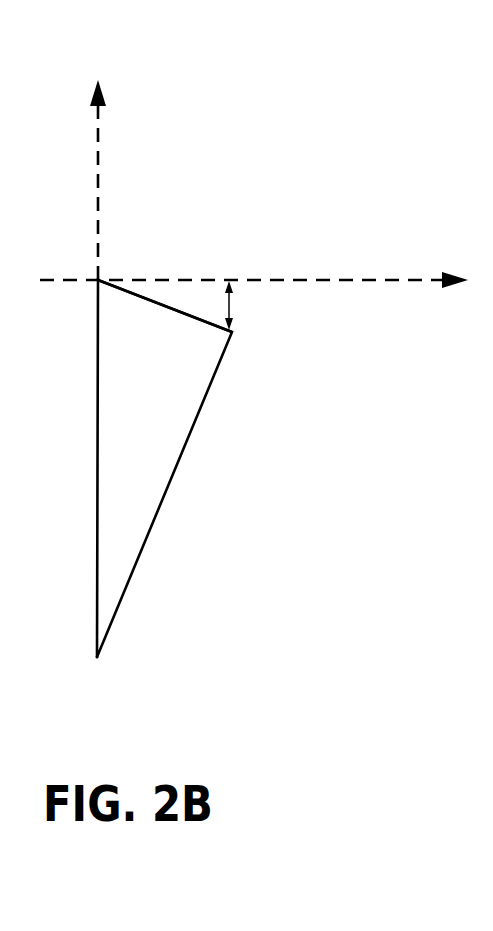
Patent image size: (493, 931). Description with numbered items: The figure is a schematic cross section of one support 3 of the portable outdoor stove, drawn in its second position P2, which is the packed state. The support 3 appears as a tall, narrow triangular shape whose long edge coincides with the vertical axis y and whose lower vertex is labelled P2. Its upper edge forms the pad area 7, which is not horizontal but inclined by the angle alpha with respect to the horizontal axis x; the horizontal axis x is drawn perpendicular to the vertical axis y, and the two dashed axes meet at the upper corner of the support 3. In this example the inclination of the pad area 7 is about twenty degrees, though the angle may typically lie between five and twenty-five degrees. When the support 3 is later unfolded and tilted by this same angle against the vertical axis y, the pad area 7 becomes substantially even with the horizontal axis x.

The support 3 is at (194, 481).
The pad area 7 is at (163, 290).
The horizontal axis x is at (264, 281).
The vertical axis y is at (98, 167).
The second position P2 is at (98, 680).